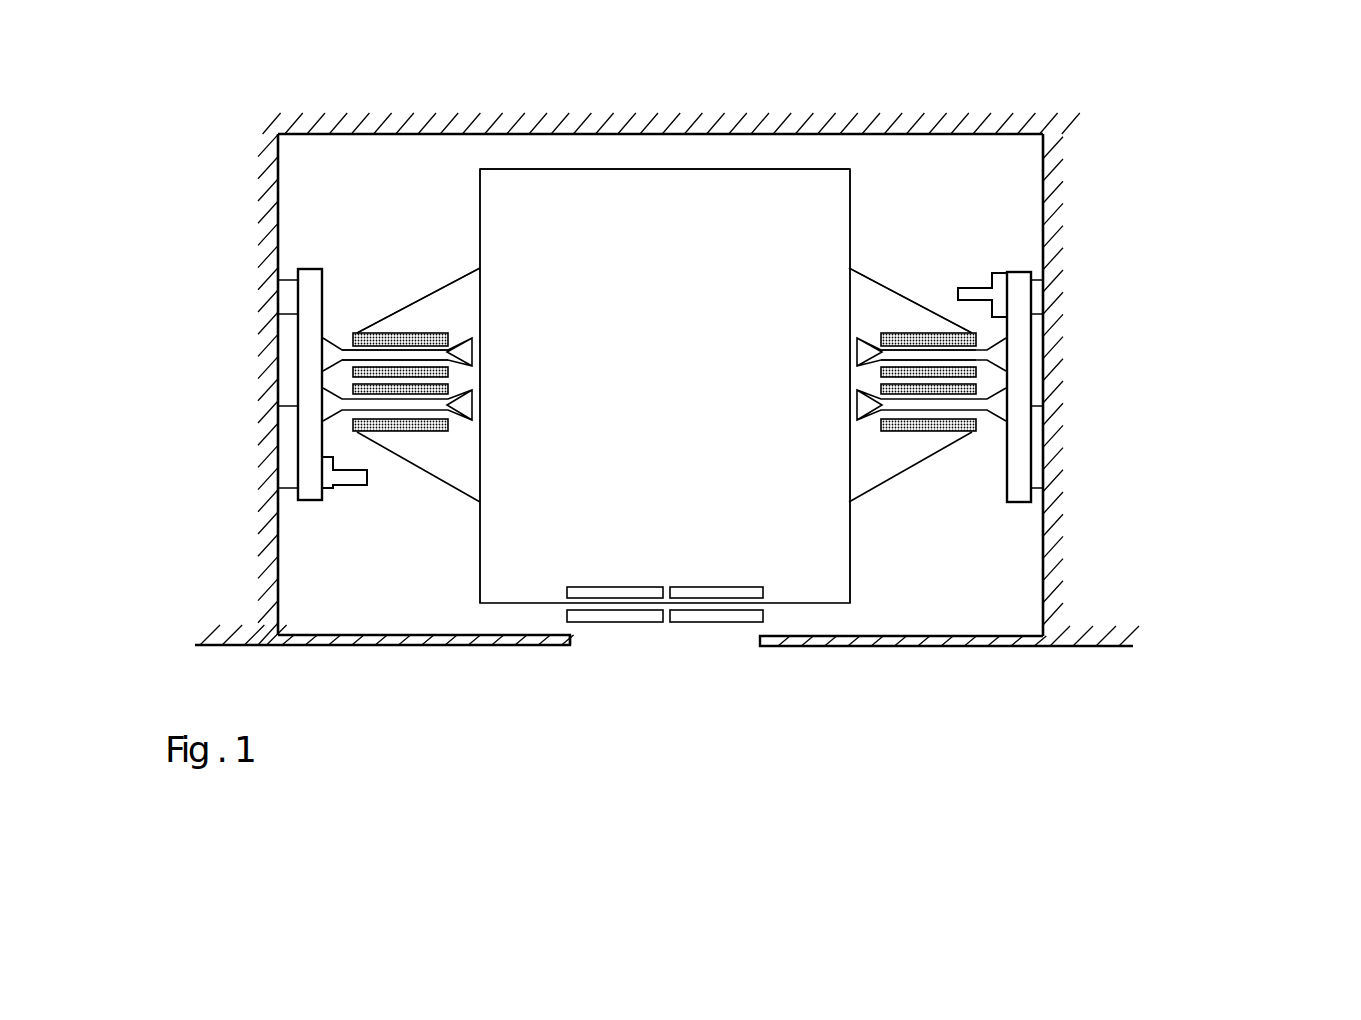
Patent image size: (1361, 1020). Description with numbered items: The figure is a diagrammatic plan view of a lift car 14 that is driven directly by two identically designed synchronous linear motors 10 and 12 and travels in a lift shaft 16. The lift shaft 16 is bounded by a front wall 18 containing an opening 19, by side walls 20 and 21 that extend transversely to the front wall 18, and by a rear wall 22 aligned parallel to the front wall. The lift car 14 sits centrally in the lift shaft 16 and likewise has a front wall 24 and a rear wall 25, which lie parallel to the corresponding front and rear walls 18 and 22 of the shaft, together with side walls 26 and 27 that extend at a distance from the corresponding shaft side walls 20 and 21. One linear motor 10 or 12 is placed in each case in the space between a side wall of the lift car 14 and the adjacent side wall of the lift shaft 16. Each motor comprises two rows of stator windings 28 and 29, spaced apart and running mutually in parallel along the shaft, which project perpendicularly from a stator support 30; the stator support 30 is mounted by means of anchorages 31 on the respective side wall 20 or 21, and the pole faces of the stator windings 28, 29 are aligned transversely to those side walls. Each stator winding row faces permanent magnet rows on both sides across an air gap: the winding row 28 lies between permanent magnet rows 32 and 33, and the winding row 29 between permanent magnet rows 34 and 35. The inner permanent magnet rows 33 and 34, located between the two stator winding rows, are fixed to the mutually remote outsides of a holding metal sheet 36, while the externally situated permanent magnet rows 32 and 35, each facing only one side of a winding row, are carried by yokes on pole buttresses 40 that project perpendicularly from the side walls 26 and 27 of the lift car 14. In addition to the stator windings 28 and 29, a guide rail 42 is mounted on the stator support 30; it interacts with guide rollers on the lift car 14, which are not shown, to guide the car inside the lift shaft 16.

The synchronous linear motor 10 is at (438, 204).
The synchronous linear motor 12 is at (897, 229).
The lift car 14 is at (803, 590).
The lift shaft 16 is at (985, 612).
The front wall 18 is at (455, 646).
The opening 19 is at (578, 646).
The side wall 20 is at (277, 176).
The side wall 21 is at (1046, 162).
The rear wall 22 is at (705, 134).
The front wall 24 is at (529, 603).
The rear wall 25 is at (676, 169).
The side wall 26 is at (481, 211).
The side wall 27 is at (850, 228).
The stator winding 28 is at (350, 356).
The stator winding 29 is at (350, 408).
The stator support 30 is at (1100, 333).
The anchorage 31 is at (290, 292).
The permanent magnet row 32 is at (440, 334).
The permanent magnet row 33 is at (462, 356).
The permanent magnet row 34 is at (462, 400).
The permanent magnet row 35 is at (432, 432).
The holding metal sheet 36 is at (473, 379).
The pole buttress 40 is at (437, 296).
The guide rail 42 is at (322, 498).